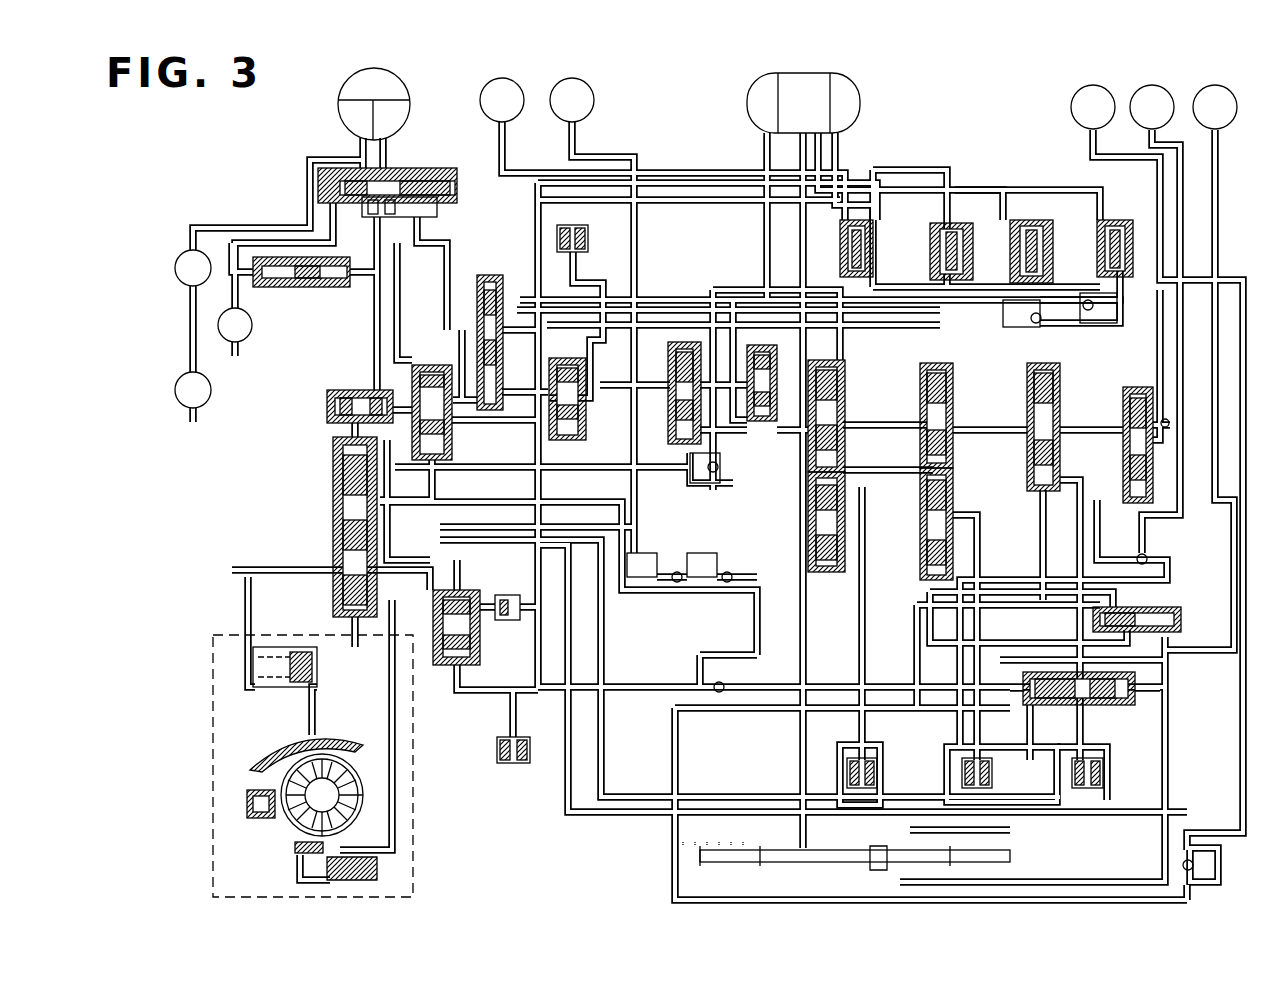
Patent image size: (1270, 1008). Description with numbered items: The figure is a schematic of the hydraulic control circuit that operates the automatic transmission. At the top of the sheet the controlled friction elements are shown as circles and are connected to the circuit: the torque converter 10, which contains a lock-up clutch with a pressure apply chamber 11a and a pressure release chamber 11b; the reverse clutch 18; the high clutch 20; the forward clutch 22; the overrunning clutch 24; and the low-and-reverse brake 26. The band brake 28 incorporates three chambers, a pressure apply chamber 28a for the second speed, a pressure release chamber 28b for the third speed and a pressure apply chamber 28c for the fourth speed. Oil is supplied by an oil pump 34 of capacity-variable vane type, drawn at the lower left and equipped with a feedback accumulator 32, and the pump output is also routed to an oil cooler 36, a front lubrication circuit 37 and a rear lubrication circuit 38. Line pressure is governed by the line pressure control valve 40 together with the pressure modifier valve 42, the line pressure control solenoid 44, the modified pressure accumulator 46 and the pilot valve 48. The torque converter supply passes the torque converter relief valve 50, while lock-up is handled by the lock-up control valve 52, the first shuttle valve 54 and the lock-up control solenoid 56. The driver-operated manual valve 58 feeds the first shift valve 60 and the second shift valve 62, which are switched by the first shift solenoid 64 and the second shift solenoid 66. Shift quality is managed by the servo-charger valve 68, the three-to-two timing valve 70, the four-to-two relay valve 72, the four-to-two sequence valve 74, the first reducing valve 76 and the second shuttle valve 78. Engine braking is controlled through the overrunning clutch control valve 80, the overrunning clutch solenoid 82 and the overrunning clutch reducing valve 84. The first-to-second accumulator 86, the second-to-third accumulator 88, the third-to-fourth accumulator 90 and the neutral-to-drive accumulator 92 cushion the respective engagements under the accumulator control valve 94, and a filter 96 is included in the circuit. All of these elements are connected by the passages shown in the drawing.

The torque converter 10 is at (402, 75).
The pressure apply chamber 11a is at (410, 122).
The pressure release chamber 11b is at (340, 118).
The reverse clutch 18 is at (510, 80).
The high clutch 20 is at (582, 80).
The forward clutch 22 is at (1102, 86).
The overrunning clutch 24 is at (1162, 86).
The low-and-reverse brake 26 is at (1224, 86).
The band brake 28 is at (810, 84).
The pressure apply chamber for the second speed 28a is at (745, 103).
The pressure release chamber for the third speed 28b is at (803, 73).
The pressure apply chamber for the fourth speed 28c is at (865, 103).
The feedback accumulator 32 is at (322, 675).
The oil pump 34 is at (293, 835).
The oil cooler 36 is at (175, 268).
The front lubrication circuit 37 is at (245, 340).
The rear lubrication circuit 38 is at (178, 382).
The line pressure control valve 40 is at (330, 595).
The pressure modifier valve 42 is at (432, 362).
The line pressure control solenoid 44 is at (497, 763).
The modified pressure accumulator 46 is at (357, 388).
The pilot valve 48 is at (470, 655).
The torque converter relief valve 50 is at (333, 290).
The lock-up control valve 52 is at (452, 210).
The first shuttle valve 54 is at (678, 446).
The lock-up control solenoid 56 is at (592, 237).
The manual valve 58 is at (932, 838).
The first shift valve 60 is at (915, 378).
The second shift valve 62 is at (837, 370).
The first shift solenoid 64 is at (995, 768).
The second shift solenoid 66 is at (878, 760).
The servo-charger valve 68 is at (476, 300).
The 3-2 timing valve 70 is at (764, 422).
The 4-2 relay valve 72 is at (918, 585).
The 4-2 sequence valve 74 is at (845, 552).
The first reducing valve 76 is at (1172, 605).
The second shuttle valve 78 is at (1075, 708).
The overrunning clutch control valve 80 is at (1065, 468).
The overrunning clutch solenoid 82 is at (1087, 790).
The overrunning clutch reducing valve 84 is at (1145, 385).
The 1-2 accumulator 86 is at (972, 232).
The 2-3 accumulator 88 is at (1050, 230).
The 3-4 accumulator 90 is at (878, 243).
The N-D accumulator 92 is at (1125, 230).
The accumulator control valve 94 is at (571, 355).
The filter 96 is at (505, 622).